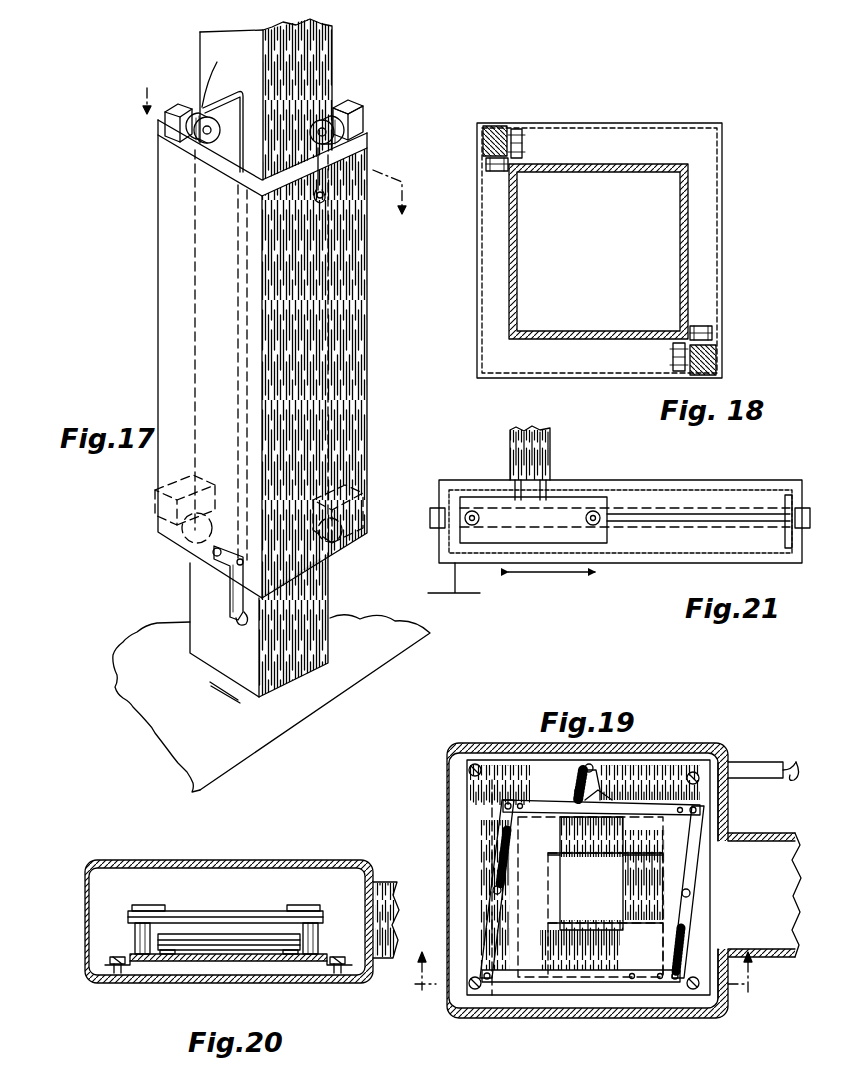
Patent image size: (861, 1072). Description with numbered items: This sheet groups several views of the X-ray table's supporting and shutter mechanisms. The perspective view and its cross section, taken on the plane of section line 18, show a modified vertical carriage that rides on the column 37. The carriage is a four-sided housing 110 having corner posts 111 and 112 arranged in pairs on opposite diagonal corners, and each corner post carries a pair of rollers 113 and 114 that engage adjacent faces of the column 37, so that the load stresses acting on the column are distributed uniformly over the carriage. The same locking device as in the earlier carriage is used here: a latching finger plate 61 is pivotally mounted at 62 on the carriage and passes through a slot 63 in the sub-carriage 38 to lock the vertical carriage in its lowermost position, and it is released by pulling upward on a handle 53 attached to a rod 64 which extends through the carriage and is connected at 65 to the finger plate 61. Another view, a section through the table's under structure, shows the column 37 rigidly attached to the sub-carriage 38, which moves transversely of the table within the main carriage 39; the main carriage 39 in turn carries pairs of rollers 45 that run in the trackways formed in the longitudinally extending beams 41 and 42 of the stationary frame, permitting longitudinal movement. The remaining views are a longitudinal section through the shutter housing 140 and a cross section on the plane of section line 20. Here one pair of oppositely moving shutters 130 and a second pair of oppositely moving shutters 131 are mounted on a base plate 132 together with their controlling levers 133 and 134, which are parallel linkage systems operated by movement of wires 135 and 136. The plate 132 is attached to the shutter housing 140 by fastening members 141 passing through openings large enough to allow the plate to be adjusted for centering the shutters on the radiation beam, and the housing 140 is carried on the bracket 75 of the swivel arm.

In FIG. 17, the section line 18— 18 is at (280, 141).
In FIG. 19, the section line 20— 20 is at (584, 986).
In FIG. 17, the column 37 is at (333, 39).
In FIG. 18, the column 37 is at (657, 172).
In FIG. 21, the column 37 is at (551, 443).
In FIG. 17, the sub-carriage 38 is at (366, 670).
In FIG. 21, the sub-carriage 38 is at (610, 497).
In FIG. 21, the main carriage 39 is at (765, 490).
In FIG. 21, the longitudinally extending beam 41 is at (800, 490).
In FIG. 21, the longitudinally extending beam 42 is at (440, 490).
In FIG. 21, the rollers 45 is at (430, 518).
In FIG. 17, the handle 53 is at (217, 72).
In FIG. 17, the latching finger plate 61 is at (242, 620).
In FIG. 17, the pivot 62 is at (226, 568).
In FIG. 17, the slot 63 is at (226, 698).
In FIG. 17, the rod 64 is at (238, 321).
In FIG. 17, the connection 65 is at (213, 553).
In FIG. 19, the bracket 75 is at (760, 833).
In FIG. 20, the bracket 75 is at (388, 880).
In FIG. 17, the four-sided housing 110 is at (367, 327).
In FIG. 18, the four-sided housing 110 is at (722, 198).
In FIG. 17, the corner post 111 is at (163, 116).
In FIG. 18, the corner post 111 is at (502, 126).
In FIG. 17, the corner post 112 is at (362, 108).
In FIG. 18, the corner post 112 is at (716, 360).
In FIG. 17, the roller 113 is at (330, 118).
In FIG. 18, the roller 113 is at (526, 135).
In FIG. 17, the roller 114 is at (208, 105).
In FIG. 18, the roller 114 is at (486, 167).
In FIG. 19, the oppositely moving shutters 130 is at (617, 893).
In FIG. 20, the oppositely moving shutters 130 is at (222, 900).
In FIG. 19, the oppositely moving shutters 131 is at (614, 860).
In FIG. 20, the oppositely moving shutters 131 is at (242, 934).
In FIG. 19, the base plate 132 is at (457, 832).
In FIG. 20, the base plate 132 is at (190, 965).
In FIG. 19, the controlling levers 133 is at (490, 915).
In FIG. 19, the controlling levers 134 is at (640, 805).
In FIG. 19, the wire 135 is at (798, 778).
In FIG. 19, the wire 136 is at (786, 775).
In FIG. 20, the shutter housing 140 is at (95, 862).
In FIG. 19, the fastening members 141 is at (468, 770).
In FIG. 20, the fastening members 141 is at (112, 958).